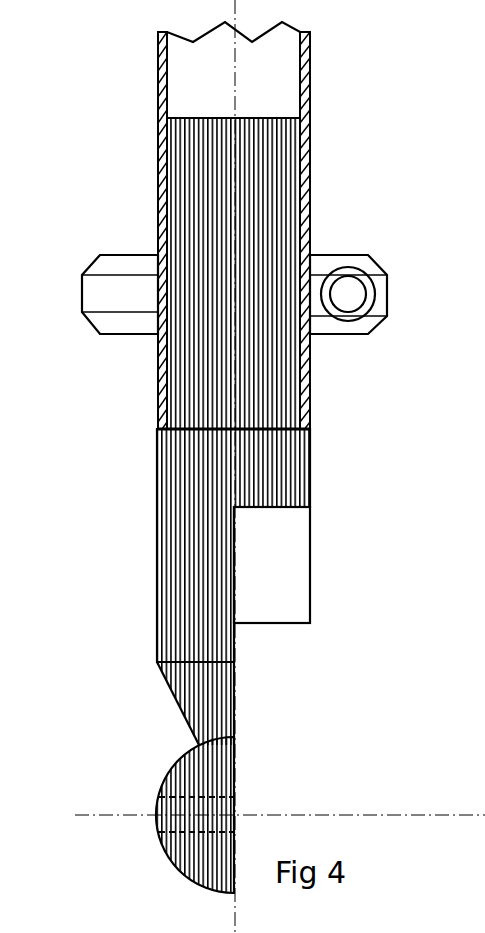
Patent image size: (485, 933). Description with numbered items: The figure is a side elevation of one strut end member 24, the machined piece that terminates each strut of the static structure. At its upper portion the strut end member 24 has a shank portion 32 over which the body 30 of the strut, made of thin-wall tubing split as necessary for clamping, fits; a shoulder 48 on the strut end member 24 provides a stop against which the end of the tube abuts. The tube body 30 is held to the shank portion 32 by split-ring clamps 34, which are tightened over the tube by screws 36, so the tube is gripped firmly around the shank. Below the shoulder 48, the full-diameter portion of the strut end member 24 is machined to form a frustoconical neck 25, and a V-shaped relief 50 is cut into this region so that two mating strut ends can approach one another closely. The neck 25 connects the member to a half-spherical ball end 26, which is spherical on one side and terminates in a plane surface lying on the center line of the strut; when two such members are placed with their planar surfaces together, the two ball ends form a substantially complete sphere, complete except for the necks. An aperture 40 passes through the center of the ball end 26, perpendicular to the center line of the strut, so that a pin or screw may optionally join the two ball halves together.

The strut end member 24 is at (156, 542).
The frustoconical neck 25 is at (172, 710).
The half-spherical ball end 26 is at (182, 879).
The strut body 30 is at (312, 92).
The shank portion 32 is at (202, 222).
The split-ring clamp 34 is at (79, 300).
The screw 36 is at (385, 281).
The aperture 40 is at (157, 821).
The shoulder 48 is at (157, 427).
The V-shaped relief 50 is at (282, 565).